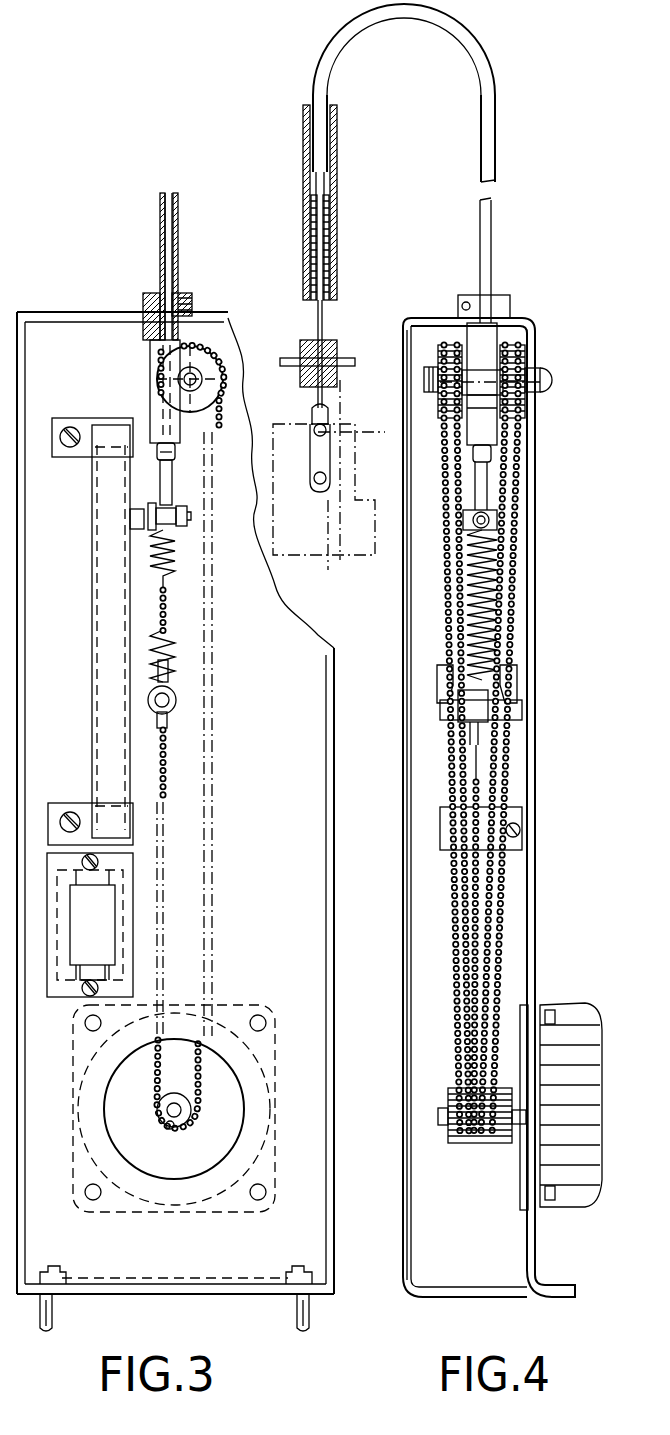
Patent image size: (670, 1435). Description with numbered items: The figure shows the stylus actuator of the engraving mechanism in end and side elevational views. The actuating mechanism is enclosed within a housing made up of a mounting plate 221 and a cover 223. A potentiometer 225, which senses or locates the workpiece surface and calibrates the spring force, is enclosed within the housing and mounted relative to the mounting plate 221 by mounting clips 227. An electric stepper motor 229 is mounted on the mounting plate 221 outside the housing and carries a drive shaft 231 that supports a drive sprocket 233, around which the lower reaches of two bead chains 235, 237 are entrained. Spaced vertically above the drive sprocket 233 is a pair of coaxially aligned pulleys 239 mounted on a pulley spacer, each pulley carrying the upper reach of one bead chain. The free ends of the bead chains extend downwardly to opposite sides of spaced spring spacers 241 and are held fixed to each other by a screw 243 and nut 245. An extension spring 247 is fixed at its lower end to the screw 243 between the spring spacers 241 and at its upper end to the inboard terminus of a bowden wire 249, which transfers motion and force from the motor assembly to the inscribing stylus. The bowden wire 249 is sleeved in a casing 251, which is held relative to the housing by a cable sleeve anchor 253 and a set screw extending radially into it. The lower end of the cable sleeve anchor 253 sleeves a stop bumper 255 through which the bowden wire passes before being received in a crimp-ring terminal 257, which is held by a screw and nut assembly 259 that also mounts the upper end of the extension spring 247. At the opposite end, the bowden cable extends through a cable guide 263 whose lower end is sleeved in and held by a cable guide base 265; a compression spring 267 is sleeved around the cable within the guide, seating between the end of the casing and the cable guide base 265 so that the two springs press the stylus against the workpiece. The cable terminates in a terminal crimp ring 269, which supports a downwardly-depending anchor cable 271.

In FIG. 4, the mounting plate 221 is at (530, 752).
In FIG. 3, the cover 223 is at (8, 293).
In FIG. 4, the cover 223 is at (405, 860).
In FIG. 3, the potentiometer 225 is at (95, 557).
In FIG. 3, the mounting clips 227 is at (72, 427).
In FIG. 3, the stepper motor 229 is at (250, 995).
In FIG. 4, the stepper motor 229 is at (580, 992).
In FIG. 3, the drive shaft 231 is at (182, 1112).
In FIG. 4, the drive shaft 231 is at (512, 1138).
In FIG. 3, the drive sprocket 233 is at (168, 1123).
In FIG. 4, the bead chain 235 is at (444, 362).
In FIG. 4, the bead chain 237 is at (528, 370).
In FIG. 3, the pulleys 239 is at (192, 365).
In FIG. 4, the spring spacers 241 is at (448, 712).
In FIG. 4, the screw 243 is at (448, 698).
In FIG. 4, the nut 245 is at (512, 700).
In FIG. 3, the extension spring 247 is at (162, 640).
In FIG. 4, the extension spring 247 is at (500, 578).
In FIG. 3, the bowden wire 249 is at (160, 236).
In FIG. 4, the bowden wire 249 is at (333, 196).
In FIG. 3, the casing 251 is at (160, 214).
In FIG. 4, the casing 251 is at (493, 68).
In FIG. 3, the cable sleeve anchor 253 is at (146, 298).
In FIG. 4, the cable sleeve anchor 253 is at (512, 302).
In FIG. 3, the stop bumper 255 is at (150, 445).
In FIG. 4, the stop bumper 255 is at (492, 455).
In FIG. 3, the link rod 257 is at (170, 487).
In FIG. 4, the link rod 257 is at (490, 490).
In FIG. 3, the screw and nut assembly 259 is at (186, 518).
In FIG. 4, the screw and nut assembly 259 is at (505, 520).
In FIG. 4, the cable guide 263 is at (304, 140).
In FIG. 4, the cable guide base 265 is at (375, 348).
In FIG. 4, the compression spring 267 is at (336, 238).
In FIG. 4, the terminal crimp ring 269 is at (326, 420).
In FIG. 4, the anchor cable 271 is at (322, 462).